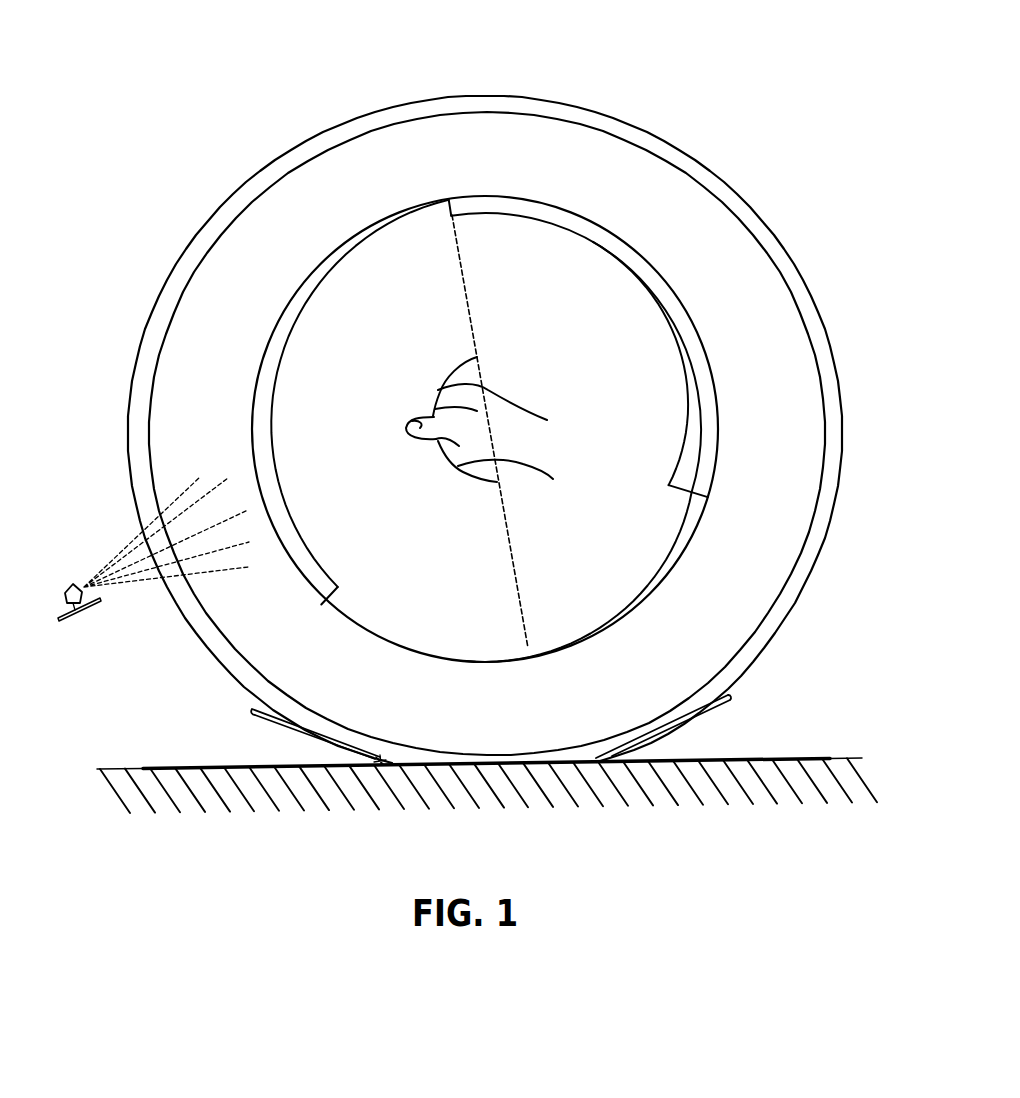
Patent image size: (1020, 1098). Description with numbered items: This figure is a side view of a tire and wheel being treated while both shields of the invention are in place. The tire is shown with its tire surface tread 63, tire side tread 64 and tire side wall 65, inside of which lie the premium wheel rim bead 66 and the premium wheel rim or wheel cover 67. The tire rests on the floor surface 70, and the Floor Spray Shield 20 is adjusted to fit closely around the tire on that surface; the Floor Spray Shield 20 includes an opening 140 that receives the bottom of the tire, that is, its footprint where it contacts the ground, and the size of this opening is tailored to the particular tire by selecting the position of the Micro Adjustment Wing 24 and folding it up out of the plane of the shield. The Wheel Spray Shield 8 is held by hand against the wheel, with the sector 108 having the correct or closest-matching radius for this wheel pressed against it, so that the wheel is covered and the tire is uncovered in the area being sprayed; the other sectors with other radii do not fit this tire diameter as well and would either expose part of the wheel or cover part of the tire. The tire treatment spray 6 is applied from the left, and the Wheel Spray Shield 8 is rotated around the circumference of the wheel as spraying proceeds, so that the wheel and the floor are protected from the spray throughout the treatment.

The Wheel Spray Shield 8 is at (471, 386).
The tire surface tread 63 is at (462, 95).
The tire side tread 64 is at (535, 107).
The tire side wall 65 is at (580, 160).
The premium wheel rim bead 66 is at (697, 354).
The premium wheel rim or wheel cover 67 is at (693, 415).
The sector 108 is at (293, 477).
The opening 140 is at (380, 763).
The Micro Adjustment Wing 24 is at (710, 710).
The Floor Spray Shield 20 is at (740, 750).
The floor surface 70 is at (357, 770).
The tire treatment spray 6 is at (60, 620).